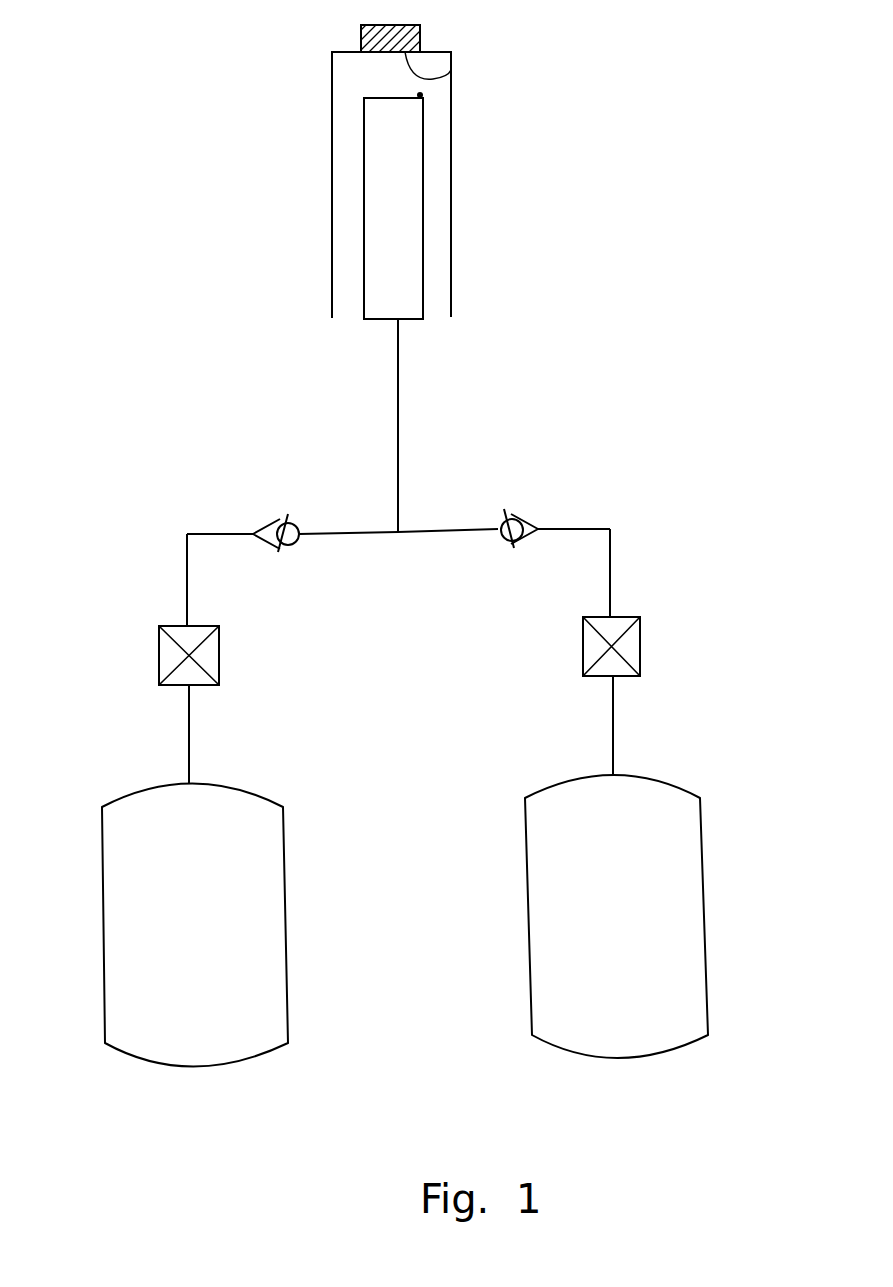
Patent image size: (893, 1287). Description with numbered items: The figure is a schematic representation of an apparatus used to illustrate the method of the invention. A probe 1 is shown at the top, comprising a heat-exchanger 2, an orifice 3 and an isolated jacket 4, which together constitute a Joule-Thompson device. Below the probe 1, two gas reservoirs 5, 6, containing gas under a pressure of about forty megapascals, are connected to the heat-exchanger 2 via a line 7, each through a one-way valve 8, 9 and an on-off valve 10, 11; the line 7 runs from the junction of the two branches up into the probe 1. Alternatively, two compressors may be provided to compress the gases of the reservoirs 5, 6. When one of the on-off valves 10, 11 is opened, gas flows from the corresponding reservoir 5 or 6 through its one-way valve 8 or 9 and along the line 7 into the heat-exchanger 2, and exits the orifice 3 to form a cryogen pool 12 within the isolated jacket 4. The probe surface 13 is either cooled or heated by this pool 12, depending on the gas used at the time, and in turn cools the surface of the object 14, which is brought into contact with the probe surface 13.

The probe 1 is at (500, 158).
The heat-exchanger 2 is at (424, 210).
The orifice 3 is at (421, 94).
The isolated jacket 4 is at (332, 70).
The gas reservoir 5 is at (103, 978).
The gas reservoir 6 is at (710, 968).
The line 7 is at (399, 435).
The one-way valve 8 is at (278, 517).
The one-way valve 9 is at (540, 512).
The on-off valve 10 is at (159, 650).
The on-off valve 11 is at (642, 632).
The cryogen pool 12 is at (375, 77).
The probe surface 13 is at (447, 74).
The object 14 is at (363, 26).